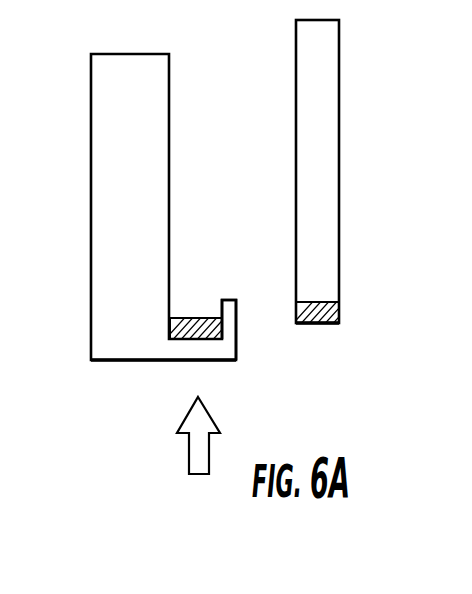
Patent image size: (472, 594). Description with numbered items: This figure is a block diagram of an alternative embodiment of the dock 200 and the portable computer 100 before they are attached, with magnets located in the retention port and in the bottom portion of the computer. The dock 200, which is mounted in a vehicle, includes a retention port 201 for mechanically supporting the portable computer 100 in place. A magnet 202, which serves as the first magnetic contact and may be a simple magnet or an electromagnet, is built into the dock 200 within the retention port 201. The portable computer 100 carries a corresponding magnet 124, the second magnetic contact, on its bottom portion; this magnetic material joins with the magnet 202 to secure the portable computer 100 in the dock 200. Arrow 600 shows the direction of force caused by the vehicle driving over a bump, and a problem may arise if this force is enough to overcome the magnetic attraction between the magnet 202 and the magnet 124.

The portable computer 100 is at (340, 97).
The magnet 124 is at (328, 325).
The dock 200 is at (92, 222).
The retention port 201 is at (236, 352).
The magnet 202 is at (194, 309).
The arrow 600 is at (189, 448).